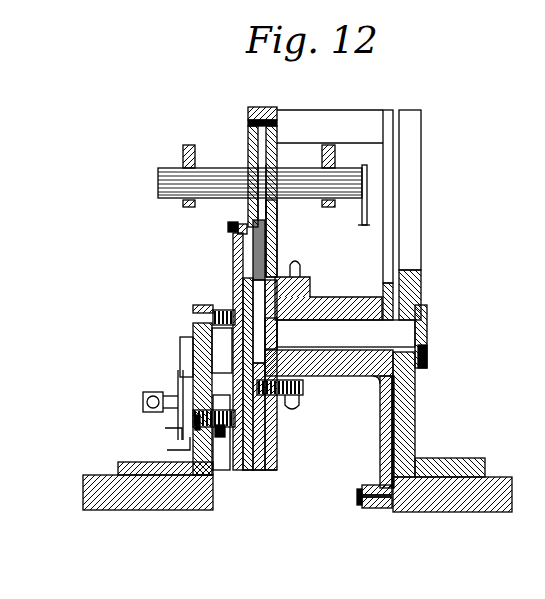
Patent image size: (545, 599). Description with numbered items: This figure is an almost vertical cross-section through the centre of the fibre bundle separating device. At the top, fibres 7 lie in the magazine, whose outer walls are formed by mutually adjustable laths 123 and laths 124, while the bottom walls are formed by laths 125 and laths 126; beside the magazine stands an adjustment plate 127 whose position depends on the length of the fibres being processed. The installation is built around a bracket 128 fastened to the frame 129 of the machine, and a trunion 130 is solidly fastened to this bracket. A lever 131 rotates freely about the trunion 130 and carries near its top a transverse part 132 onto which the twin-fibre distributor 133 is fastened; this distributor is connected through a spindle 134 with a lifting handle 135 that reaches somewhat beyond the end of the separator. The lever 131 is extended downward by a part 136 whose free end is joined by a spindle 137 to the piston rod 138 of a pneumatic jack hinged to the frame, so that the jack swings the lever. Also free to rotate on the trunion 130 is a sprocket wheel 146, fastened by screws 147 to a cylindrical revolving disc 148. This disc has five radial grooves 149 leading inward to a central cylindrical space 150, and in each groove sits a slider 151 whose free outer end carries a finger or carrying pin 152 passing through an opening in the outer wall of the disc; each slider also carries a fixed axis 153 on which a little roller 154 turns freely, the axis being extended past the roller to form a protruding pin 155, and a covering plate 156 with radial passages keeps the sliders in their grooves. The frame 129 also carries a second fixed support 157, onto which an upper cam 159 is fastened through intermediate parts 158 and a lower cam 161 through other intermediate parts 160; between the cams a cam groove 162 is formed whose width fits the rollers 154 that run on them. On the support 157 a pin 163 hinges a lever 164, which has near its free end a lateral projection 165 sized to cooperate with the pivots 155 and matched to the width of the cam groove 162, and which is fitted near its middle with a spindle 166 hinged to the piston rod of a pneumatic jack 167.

The fibres 7 is at (160, 184).
The laths 123 is at (183, 156).
The laths 124 is at (329, 145).
The laths 125 is at (186, 203).
The laths 126 is at (329, 207).
The adjustment plate 127 is at (373, 170).
The bracket 128 is at (408, 434).
The frame 129 is at (118, 510).
The trunion 130 is at (410, 330).
The lever 131 is at (388, 249).
The transverse part 132 is at (375, 112).
The twin-fibre distributor 133 is at (273, 107).
The spindle 134 is at (277, 123).
The lifting handle 135 is at (248, 132).
The part 136 is at (384, 420).
The spindle 137 is at (375, 508).
The piston rod 138 is at (359, 502).
The sprocket wheel 146 is at (301, 267).
The screws 147 is at (300, 398).
The cylindrical revolving disc 148 is at (262, 451).
The radial grooves 149 is at (258, 299).
The cylindrical space 150 is at (383, 197).
The slider 151 is at (266, 247).
The rod end 152 is at (256, 178).
The fixed axis 153 is at (274, 225).
The roller 154 is at (236, 234).
The pin or tap 155 is at (228, 228).
The covering plate 156 is at (250, 472).
The second fixed support 157 is at (118, 470).
The intermediate parts 158 is at (220, 323).
The upper cam 159 is at (233, 263).
The intermediate parts 160 is at (243, 424).
The lower cam 161 is at (225, 440).
The cam groove 162 is at (233, 390).
The pin 163 is at (190, 438).
The lever 164 is at (165, 433).
The lateral projection 165 is at (212, 354).
The spindle 166 is at (175, 412).
The pneumatic jack 167 is at (143, 400).